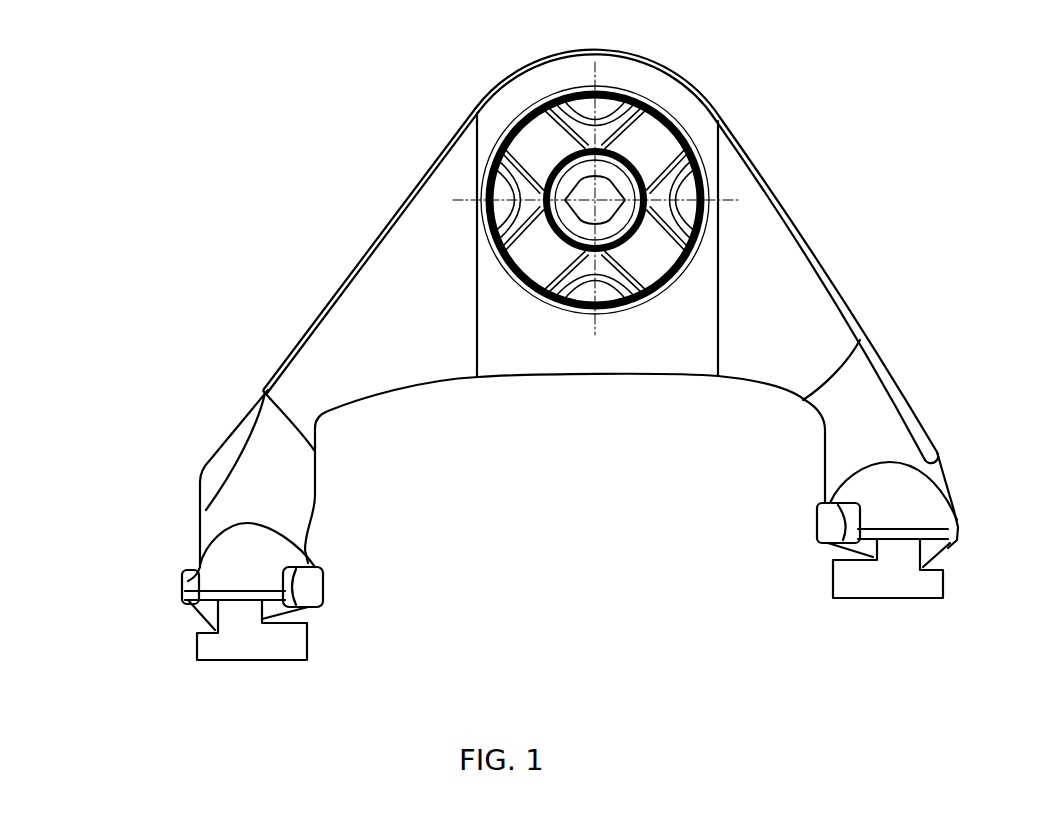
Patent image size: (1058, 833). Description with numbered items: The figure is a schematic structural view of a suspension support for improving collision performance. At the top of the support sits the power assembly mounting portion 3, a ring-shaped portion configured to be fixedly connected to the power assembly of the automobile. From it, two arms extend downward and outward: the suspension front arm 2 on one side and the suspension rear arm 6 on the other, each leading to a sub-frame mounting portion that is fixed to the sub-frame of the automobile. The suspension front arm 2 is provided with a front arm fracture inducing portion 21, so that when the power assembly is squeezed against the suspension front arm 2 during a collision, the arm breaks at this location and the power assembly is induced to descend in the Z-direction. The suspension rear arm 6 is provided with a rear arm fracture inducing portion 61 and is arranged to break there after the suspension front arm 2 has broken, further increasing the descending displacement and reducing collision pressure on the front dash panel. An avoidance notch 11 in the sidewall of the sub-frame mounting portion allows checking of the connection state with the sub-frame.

The suspension front arm 2 is at (330, 352).
The power assembly mounting portion 3 is at (653, 148).
The suspension rear arm 6 is at (800, 324).
The avoidance notch 11 is at (245, 612).
The front arm fracture inducing portion 21 is at (320, 437).
The rear arm fracture inducing portion 61 is at (805, 397).